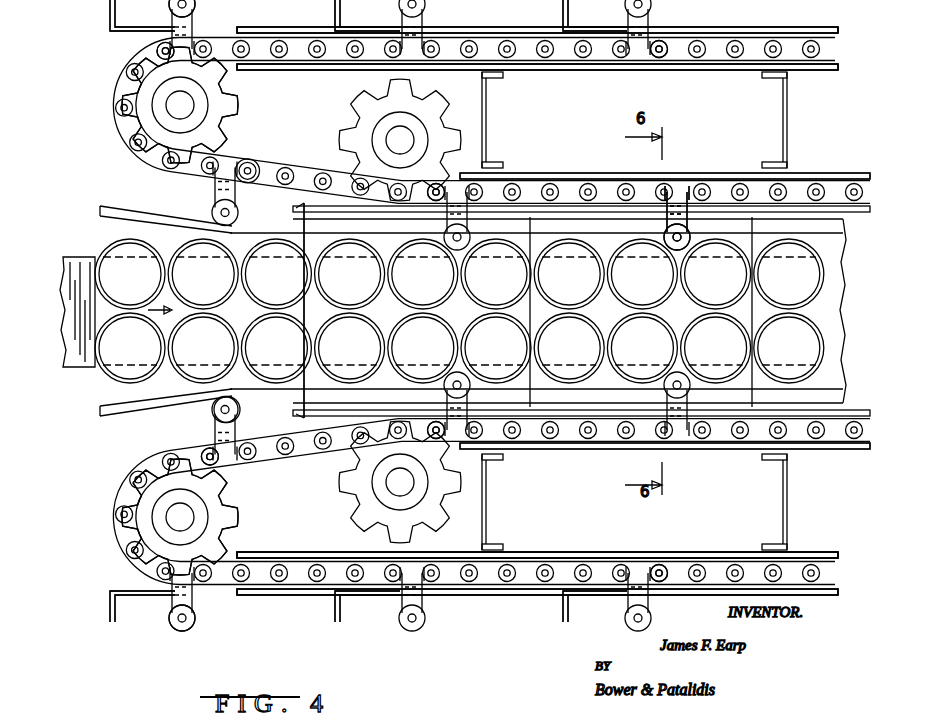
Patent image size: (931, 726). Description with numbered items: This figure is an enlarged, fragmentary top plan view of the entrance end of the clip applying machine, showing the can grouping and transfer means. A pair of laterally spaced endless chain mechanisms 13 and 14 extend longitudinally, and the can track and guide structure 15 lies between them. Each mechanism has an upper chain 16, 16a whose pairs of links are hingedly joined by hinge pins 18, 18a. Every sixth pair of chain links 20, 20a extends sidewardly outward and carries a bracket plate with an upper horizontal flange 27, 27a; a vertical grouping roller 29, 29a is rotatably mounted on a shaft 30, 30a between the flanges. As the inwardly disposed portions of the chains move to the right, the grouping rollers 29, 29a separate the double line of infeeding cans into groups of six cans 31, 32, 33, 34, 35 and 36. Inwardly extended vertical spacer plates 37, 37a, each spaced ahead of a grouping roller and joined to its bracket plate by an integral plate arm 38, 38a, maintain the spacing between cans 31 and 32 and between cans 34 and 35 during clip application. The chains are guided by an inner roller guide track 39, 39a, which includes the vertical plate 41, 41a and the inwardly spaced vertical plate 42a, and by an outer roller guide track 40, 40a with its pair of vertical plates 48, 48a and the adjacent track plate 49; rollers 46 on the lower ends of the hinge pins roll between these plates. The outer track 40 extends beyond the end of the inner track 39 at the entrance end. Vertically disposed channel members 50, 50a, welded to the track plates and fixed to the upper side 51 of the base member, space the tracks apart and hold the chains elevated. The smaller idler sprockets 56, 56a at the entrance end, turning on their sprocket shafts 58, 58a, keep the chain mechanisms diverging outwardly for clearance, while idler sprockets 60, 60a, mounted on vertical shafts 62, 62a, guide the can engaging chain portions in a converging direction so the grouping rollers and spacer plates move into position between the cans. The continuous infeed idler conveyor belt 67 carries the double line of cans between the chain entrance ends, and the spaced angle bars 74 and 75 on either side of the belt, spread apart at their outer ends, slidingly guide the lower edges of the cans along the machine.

The chain mechanism 13 is at (134, 580).
The chain mechanism 14 is at (122, 61).
The can track and guide structure 15 is at (98, 208).
The upper chain 16 is at (114, 495).
The upper chain 16a is at (118, 131).
The hinge pin 18 is at (138, 470).
The hinge pin 18a is at (138, 150).
The chain link 20 is at (232, 465).
The chain link 20a is at (160, 40).
The horizontal flange 27 is at (218, 430).
The horizontal flange 27a is at (368, 15).
The grouping roller 29 is at (212, 410).
The grouping roller 29a is at (212, 205).
The shaft 30 is at (240, 410).
The shaft 30a is at (192, 8).
The can 31 is at (727, 285).
The can 32 is at (801, 285).
The can 33 is at (654, 285).
The can 34 is at (727, 357).
The can 35 is at (801, 357).
The can 36 is at (654, 357).
The spacer plate 37 is at (308, 416).
The spacer plate 37a is at (308, 203).
The plate arm 38 is at (144, 598).
The plate arm 38a is at (240, 208).
The inner roller guide track 39 is at (528, 456).
The inner roller guide track 39a is at (588, 168).
The outer roller guide track 40 is at (553, 557).
The outer roller guide track 40a is at (616, 78).
The vertical plate 41 is at (604, 446).
The vertical plate 41a is at (690, 175).
The vertical plate 42a is at (650, 205).
The roller 46 is at (252, 160).
The vertical plate 48 is at (532, 598).
The vertical plate 48a is at (540, 72).
The rail 49 is at (612, 556).
The channel member 50 is at (484, 518).
The channel member 50a is at (488, 138).
The upper side of base member 51 is at (512, 540).
The idler sprocket 56 is at (232, 525).
The idler sprocket 56a is at (232, 108).
The shaft 58 is at (186, 520).
The shaft 58a is at (185, 103).
The idler sprocket 60 is at (355, 505).
The idler sprocket 60a is at (362, 100).
The vertical shaft 62 is at (398, 482).
The vertical shaft 62a is at (400, 138).
The infeed idler conveyor belt 67 is at (84, 256).
The angle bar 74 is at (136, 206).
The angle bar 75 is at (100, 412).